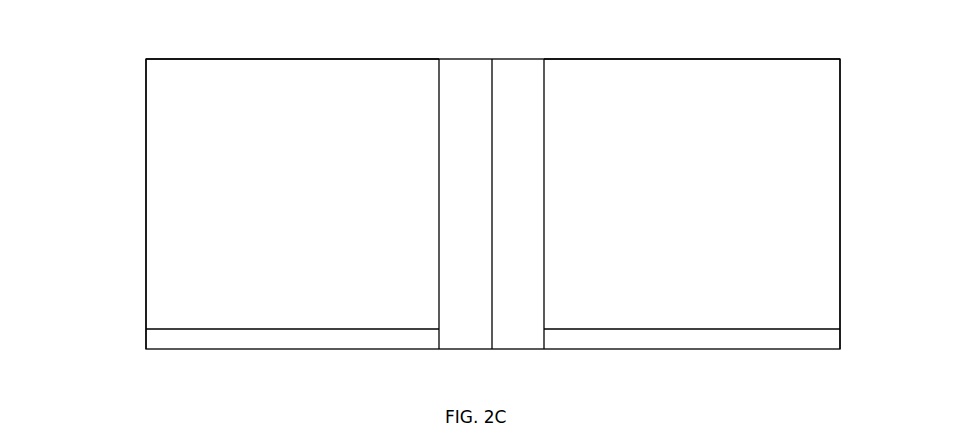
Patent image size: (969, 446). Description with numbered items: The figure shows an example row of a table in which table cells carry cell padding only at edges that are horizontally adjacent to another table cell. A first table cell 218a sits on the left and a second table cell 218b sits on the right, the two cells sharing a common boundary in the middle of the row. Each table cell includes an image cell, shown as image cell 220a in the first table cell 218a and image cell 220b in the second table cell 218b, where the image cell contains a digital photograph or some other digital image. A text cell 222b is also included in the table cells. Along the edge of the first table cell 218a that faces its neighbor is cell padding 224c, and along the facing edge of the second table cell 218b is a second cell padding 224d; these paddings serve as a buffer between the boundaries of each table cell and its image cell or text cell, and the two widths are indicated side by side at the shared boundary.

The first table cell 218a is at (263, 40).
The table cell 218b is at (692, 40).
The image cell 220a is at (91, 204).
The image cell 220b is at (884, 204).
The text cell 222b is at (476, 317).
The cell padding 224c is at (492, 158).
The second cell padding 224d is at (544, 158).